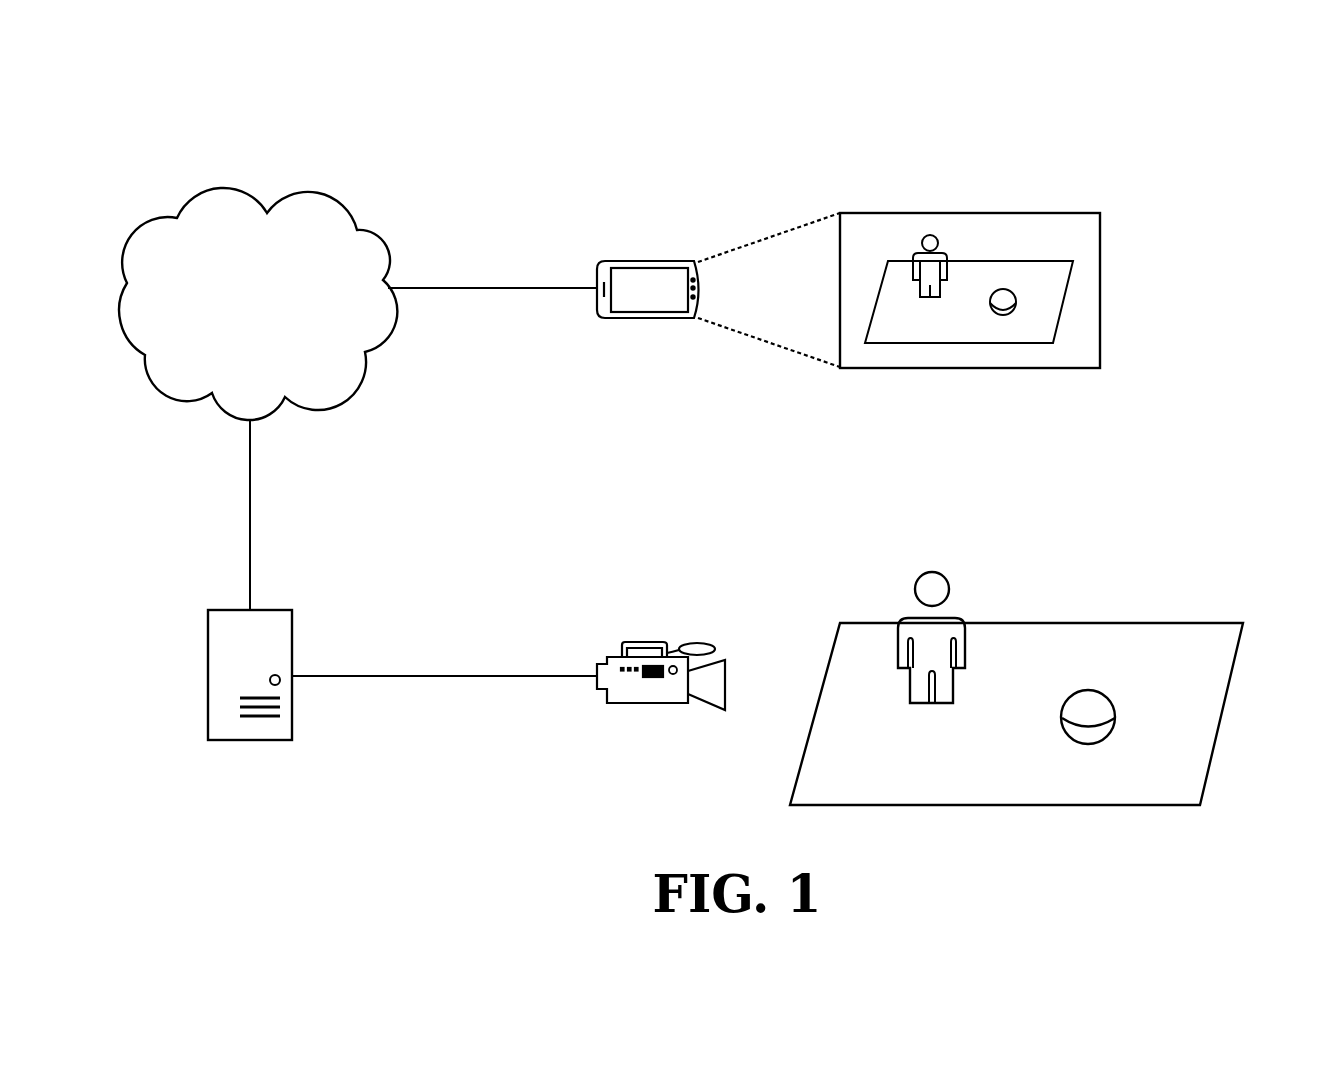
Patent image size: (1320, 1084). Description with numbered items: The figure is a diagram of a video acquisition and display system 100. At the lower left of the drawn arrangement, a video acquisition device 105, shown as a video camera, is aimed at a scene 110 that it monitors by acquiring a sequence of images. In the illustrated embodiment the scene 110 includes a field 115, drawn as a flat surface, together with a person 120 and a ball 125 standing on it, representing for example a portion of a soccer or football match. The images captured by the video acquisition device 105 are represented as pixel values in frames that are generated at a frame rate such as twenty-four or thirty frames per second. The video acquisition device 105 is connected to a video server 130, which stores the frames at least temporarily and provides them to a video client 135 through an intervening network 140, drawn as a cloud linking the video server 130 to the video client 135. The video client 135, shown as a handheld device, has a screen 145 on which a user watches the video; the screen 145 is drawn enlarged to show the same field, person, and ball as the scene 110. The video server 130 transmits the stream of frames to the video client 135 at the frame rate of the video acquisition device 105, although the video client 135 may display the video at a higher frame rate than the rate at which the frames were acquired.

The video acquisition and display system 100 is at (1206, 132).
The video acquisition device 105 is at (648, 705).
The scene 110 is at (1073, 542).
The field 115 is at (997, 806).
The person 120 is at (960, 612).
The ball 125 is at (1112, 700).
The video server 130 is at (250, 742).
The video client 135 is at (650, 319).
The network 140 is at (242, 313).
The screen 145 is at (968, 370).